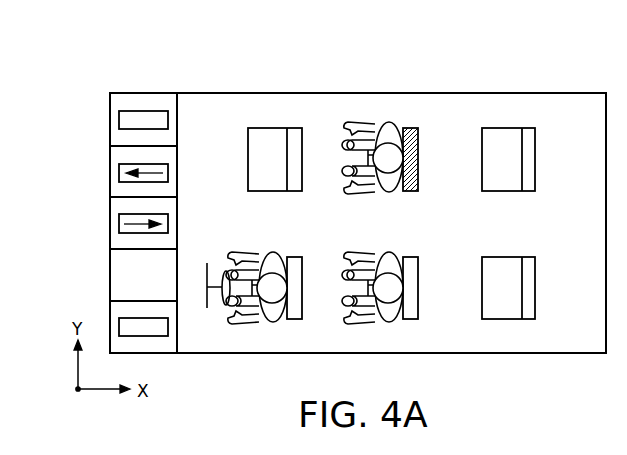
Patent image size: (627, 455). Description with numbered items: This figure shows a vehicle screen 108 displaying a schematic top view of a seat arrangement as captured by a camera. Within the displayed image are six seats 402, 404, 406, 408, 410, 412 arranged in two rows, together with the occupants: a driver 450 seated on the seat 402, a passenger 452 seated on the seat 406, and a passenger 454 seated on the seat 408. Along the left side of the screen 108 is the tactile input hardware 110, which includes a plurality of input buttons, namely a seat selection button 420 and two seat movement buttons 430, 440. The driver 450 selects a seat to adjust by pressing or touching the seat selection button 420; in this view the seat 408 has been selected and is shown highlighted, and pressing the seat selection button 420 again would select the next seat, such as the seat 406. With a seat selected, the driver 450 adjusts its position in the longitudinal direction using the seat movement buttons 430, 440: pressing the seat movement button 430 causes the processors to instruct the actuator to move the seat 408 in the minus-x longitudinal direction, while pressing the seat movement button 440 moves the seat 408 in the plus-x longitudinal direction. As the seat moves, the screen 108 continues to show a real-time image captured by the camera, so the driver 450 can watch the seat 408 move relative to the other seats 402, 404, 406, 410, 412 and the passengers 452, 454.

The screen 108 is at (485, 93).
The tactile input hardware 110 is at (142, 93).
The seat selection button 420 is at (118, 122).
The seat movement button 430 is at (118, 175).
The seat movement button 440 is at (118, 228).
The seat 402 is at (293, 257).
The seat 404 is at (295, 128).
The seat 406 is at (410, 257).
The seat 408 is at (409, 128).
The seat 410 is at (527, 257).
The seat 412 is at (527, 128).
The driver 450 is at (262, 255).
The passenger 452 is at (376, 255).
The passenger 454 is at (370, 121).